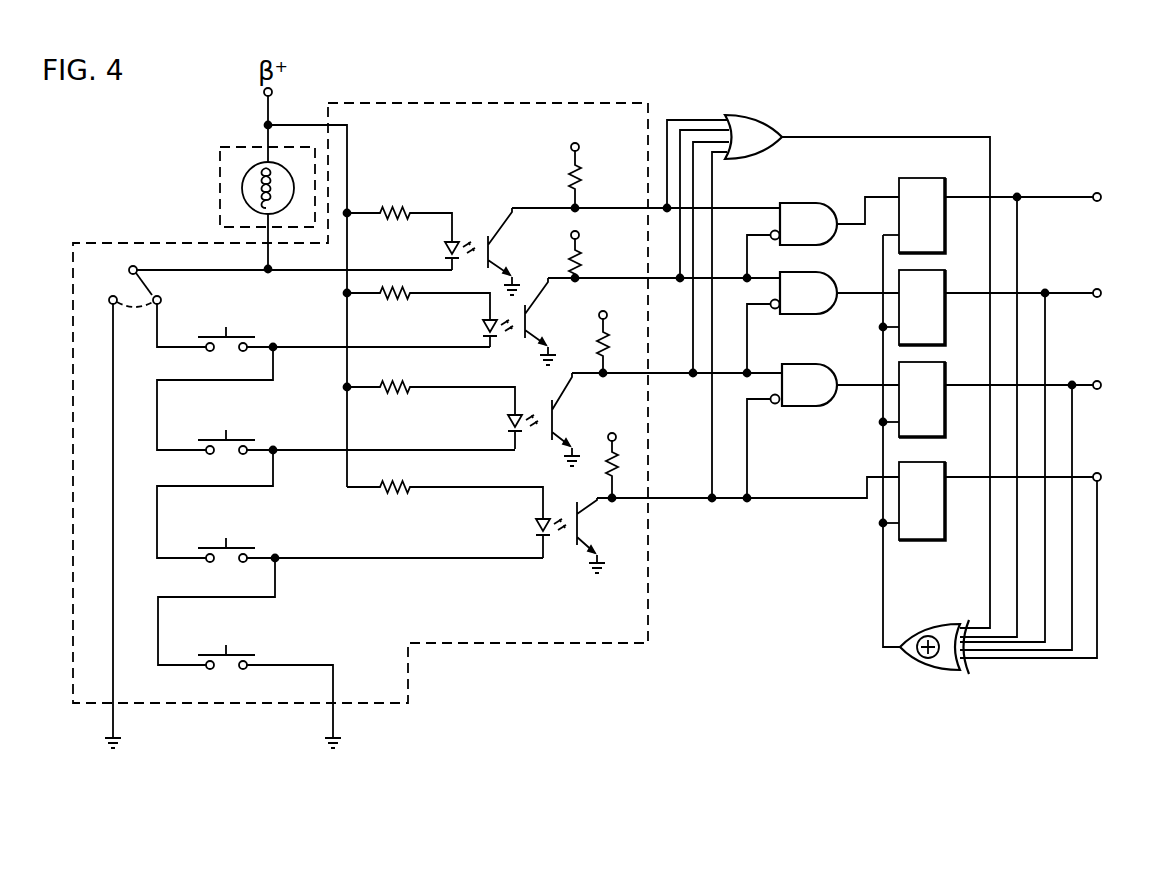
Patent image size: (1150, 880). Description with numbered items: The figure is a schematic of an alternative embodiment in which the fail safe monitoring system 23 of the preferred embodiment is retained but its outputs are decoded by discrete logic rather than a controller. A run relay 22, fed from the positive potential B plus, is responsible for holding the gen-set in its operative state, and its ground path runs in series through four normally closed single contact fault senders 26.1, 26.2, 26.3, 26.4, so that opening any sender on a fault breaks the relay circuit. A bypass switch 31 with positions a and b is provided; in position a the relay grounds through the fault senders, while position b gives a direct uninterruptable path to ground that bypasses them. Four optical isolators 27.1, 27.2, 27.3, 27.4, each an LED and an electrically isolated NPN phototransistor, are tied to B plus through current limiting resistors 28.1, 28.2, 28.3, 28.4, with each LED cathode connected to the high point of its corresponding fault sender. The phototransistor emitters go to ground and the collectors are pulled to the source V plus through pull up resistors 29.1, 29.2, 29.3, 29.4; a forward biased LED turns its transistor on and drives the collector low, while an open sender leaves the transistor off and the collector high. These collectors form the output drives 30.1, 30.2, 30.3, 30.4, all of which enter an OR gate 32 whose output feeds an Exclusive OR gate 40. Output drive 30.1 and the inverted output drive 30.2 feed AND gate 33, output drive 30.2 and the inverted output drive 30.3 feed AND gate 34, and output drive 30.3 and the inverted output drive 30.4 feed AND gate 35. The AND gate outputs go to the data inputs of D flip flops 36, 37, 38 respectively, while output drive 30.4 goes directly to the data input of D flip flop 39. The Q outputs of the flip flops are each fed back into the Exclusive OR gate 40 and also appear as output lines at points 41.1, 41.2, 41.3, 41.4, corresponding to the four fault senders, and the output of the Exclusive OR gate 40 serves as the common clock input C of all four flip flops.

The run relay 22 is at (220, 182).
The fail safe monitoring system 23 is at (615, 103).
The single contact fault sender 26.1 is at (344, 331).
The single contact fault sender 26.2 is at (356, 434).
The single contact fault sender 26.3 is at (370, 542).
The single contact fault sender 26.4 is at (265, 679).
The optical isolator 27.1 is at (482, 244).
The optical isolator 27.2 is at (519, 324).
The optical isolator 27.3 is at (544, 423).
The optical isolator 27.4 is at (570, 541).
The current limiting resistor 28.1 is at (401, 218).
The current limiting resistor 28.2 is at (420, 300).
The current limiting resistor 28.3 is at (433, 391).
The current limiting resistor 28.4 is at (445, 487).
The pull up resistor 29.1 is at (590, 163).
The pull up resistor 29.2 is at (590, 242).
The pull up resistor 29.3 is at (617, 330).
The pull up resistor 29.4 is at (627, 453).
The output drive 30.1 is at (646, 221).
The output drive 30.2 is at (664, 290).
The output drive 30.3 is at (677, 386).
The output drive 30.4 is at (748, 502).
The bypass switch 31 is at (129, 270).
The OR gate 32 is at (745, 115).
The AND gate 33 is at (795, 203).
The AND gate 34 is at (818, 272).
The AND gate 35 is at (818, 365).
The D flip flop 36 is at (925, 178).
The D flip flop 37 is at (935, 270).
The D flip flop 38 is at (935, 362).
The D flip flop 39 is at (935, 462).
The Exclusive OR gate 40 is at (928, 624).
The output point 41.1 is at (1047, 411).
The output point 41.2 is at (1047, 461).
The output point 41.3 is at (1047, 512).
The output point 41.4 is at (1047, 561).